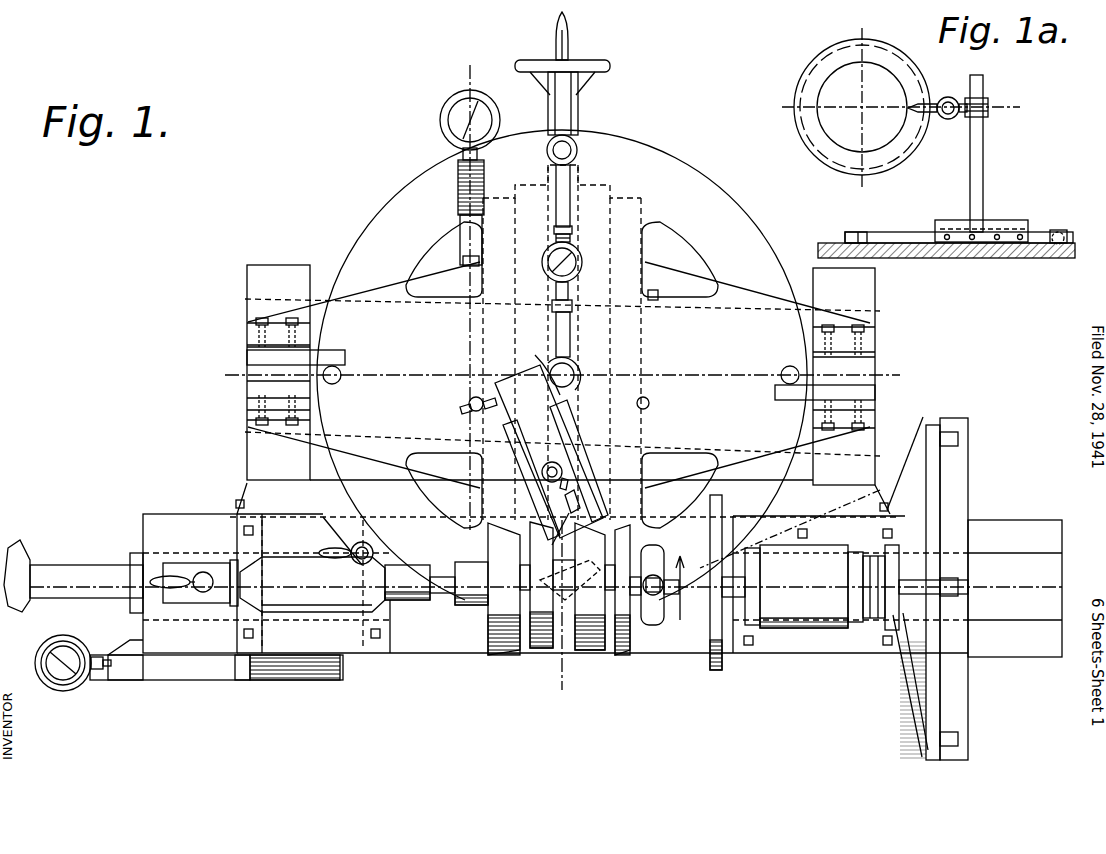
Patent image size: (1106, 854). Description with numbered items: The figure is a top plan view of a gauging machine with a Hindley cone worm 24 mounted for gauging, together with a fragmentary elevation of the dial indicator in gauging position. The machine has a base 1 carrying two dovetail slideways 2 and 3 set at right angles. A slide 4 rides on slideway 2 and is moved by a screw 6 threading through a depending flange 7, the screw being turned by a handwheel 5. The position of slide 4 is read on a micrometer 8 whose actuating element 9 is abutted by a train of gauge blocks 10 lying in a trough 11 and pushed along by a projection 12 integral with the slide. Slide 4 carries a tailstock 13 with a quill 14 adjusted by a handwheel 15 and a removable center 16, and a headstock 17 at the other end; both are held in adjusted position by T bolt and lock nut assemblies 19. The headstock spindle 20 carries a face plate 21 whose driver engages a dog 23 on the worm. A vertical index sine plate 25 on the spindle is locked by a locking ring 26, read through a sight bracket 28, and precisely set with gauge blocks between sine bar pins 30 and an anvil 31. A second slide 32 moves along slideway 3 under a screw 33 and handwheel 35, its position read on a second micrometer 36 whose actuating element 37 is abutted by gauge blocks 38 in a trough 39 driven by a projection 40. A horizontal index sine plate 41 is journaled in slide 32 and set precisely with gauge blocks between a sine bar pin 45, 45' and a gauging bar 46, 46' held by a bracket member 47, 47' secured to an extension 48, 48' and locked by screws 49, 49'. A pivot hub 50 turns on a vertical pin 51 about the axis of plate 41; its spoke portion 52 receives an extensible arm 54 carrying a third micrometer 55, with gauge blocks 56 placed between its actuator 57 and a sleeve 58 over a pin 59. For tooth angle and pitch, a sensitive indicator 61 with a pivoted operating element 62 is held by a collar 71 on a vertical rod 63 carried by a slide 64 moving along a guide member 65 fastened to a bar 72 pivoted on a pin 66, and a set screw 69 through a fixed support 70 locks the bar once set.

In FIG. 1, the base 1 is at (563, 524).
In FIG. 1, the slideway 2 is at (196, 541).
In FIG. 1, the slideway 3 is at (618, 200).
In FIG. 1, the slide 4 is at (337, 505).
In FIG. 1, the handwheel 5 is at (14, 540).
In FIG. 1, the screw 6 is at (200, 592).
In FIG. 1, the flange 7 is at (485, 82).
In FIG. 1, the micrometer 8 is at (66, 692).
In FIG. 1, the actuating element 9 is at (108, 668).
In FIG. 1, the gauge blocks 10 is at (135, 680).
In FIG. 1, the trough 11 is at (305, 682).
In FIG. 1, the projection 12 is at (245, 682).
In FIG. 1, the tailstock 13 is at (318, 590).
In FIG. 1, the quill 14 is at (405, 600).
In FIG. 1, the handwheel 15 is at (155, 578).
In FIG. 1, the removable center 16 is at (447, 577).
In FIG. 1, the headstock 17 is at (806, 578).
In FIG. 1, the T bolt and lock nut assemblies 19 is at (244, 530).
In FIG. 1, the spindle 20 is at (686, 576).
In FIG. 1, the face plate 21 is at (714, 672).
In FIG. 1, the dog 23 is at (652, 626).
In FIG. 1, the cone worm 24 is at (600, 652).
In FIG. 1, the vertical index sine plate 25 is at (941, 478).
In FIG. 1, the locking ring 26 is at (888, 615).
In FIG. 1, the sight bracket 28 is at (905, 700).
In FIG. 1, the sine bar pins 30 is at (955, 430).
In FIG. 1, the anvil 31 is at (969, 497).
In FIG. 1, the slide 32 is at (665, 268).
In FIG. 1, the screw 33 is at (553, 233).
In FIG. 1, the handwheel 35 is at (606, 64).
In FIG. 1, the second micrometer 36 is at (440, 120).
In FIG. 1, the actuating element 37 is at (460, 152).
In FIG. 1, the gauge blocks 38 is at (462, 235).
In FIG. 1, the trough 39 is at (456, 170).
In FIG. 1, the projection 40 is at (462, 260).
In FIG. 1, the index sine plate 41 is at (447, 345).
In FIG. 1A, the index sine plate 41 is at (1020, 259).
In FIG. 1, the sine bar pin 45 is at (349, 381).
In FIG. 1, the sine bar pin 45' is at (769, 363).
In FIG. 1, the gauging bar 46 is at (314, 349).
In FIG. 1, the gauging bar 46' is at (802, 395).
In FIG. 1, the bracket member 47 is at (256, 338).
In FIG. 1, the bracket member 47' is at (862, 340).
In FIG. 1, the extension 48 is at (258, 372).
In FIG. 1, the extension 48' is at (864, 376).
In FIG. 1A, the extension 48' is at (909, 287).
In FIG. 1, the screws 49 is at (277, 353).
In FIG. 1, the screws 49' is at (843, 390).
In FIG. 1, the pivot hub 50 is at (576, 368).
In FIG. 1, the vertical pin 51 is at (545, 362).
In FIG. 1, the spoke portion 52 is at (571, 330).
In FIG. 1, the extensible arm 54 is at (556, 292).
In FIG. 1, the third micrometer 55 is at (580, 260).
In FIG. 1, the gauge blocks 56 is at (556, 175).
In FIG. 1, the actuator 57 is at (571, 232).
In FIG. 1, the sleeve 58 is at (574, 140).
In FIG. 1, the pin 59 is at (577, 152).
In FIG. 1, the sensitive indicator 61 is at (563, 505).
In FIG. 1A, the sensitive indicator 61 is at (948, 96).
In FIG. 1A, the operating element 62 is at (912, 113).
In FIG. 1, the vertical rod 63 is at (543, 477).
In FIG. 1A, the vertical rod 63 is at (984, 170).
In FIG. 1, the slide 64 is at (530, 440).
In FIG. 1A, the slide 64 is at (950, 222).
In FIG. 1, the guide member 65 is at (570, 430).
In FIG. 1A, the guide member 65 is at (937, 225).
In FIG. 1, the pin 66 is at (540, 590).
In FIG. 1, the set screw 69 is at (462, 412).
In FIG. 1A, the set screw 69 is at (1062, 230).
In FIG. 1, the fixed support 70 is at (468, 404).
In FIG. 1A, the fixed support 70 is at (1055, 231).
In FIG. 1A, the collar 71 is at (990, 100).
In FIG. 1, the bar 72 is at (505, 378).
In FIG. 1A, the bar 72 is at (896, 232).